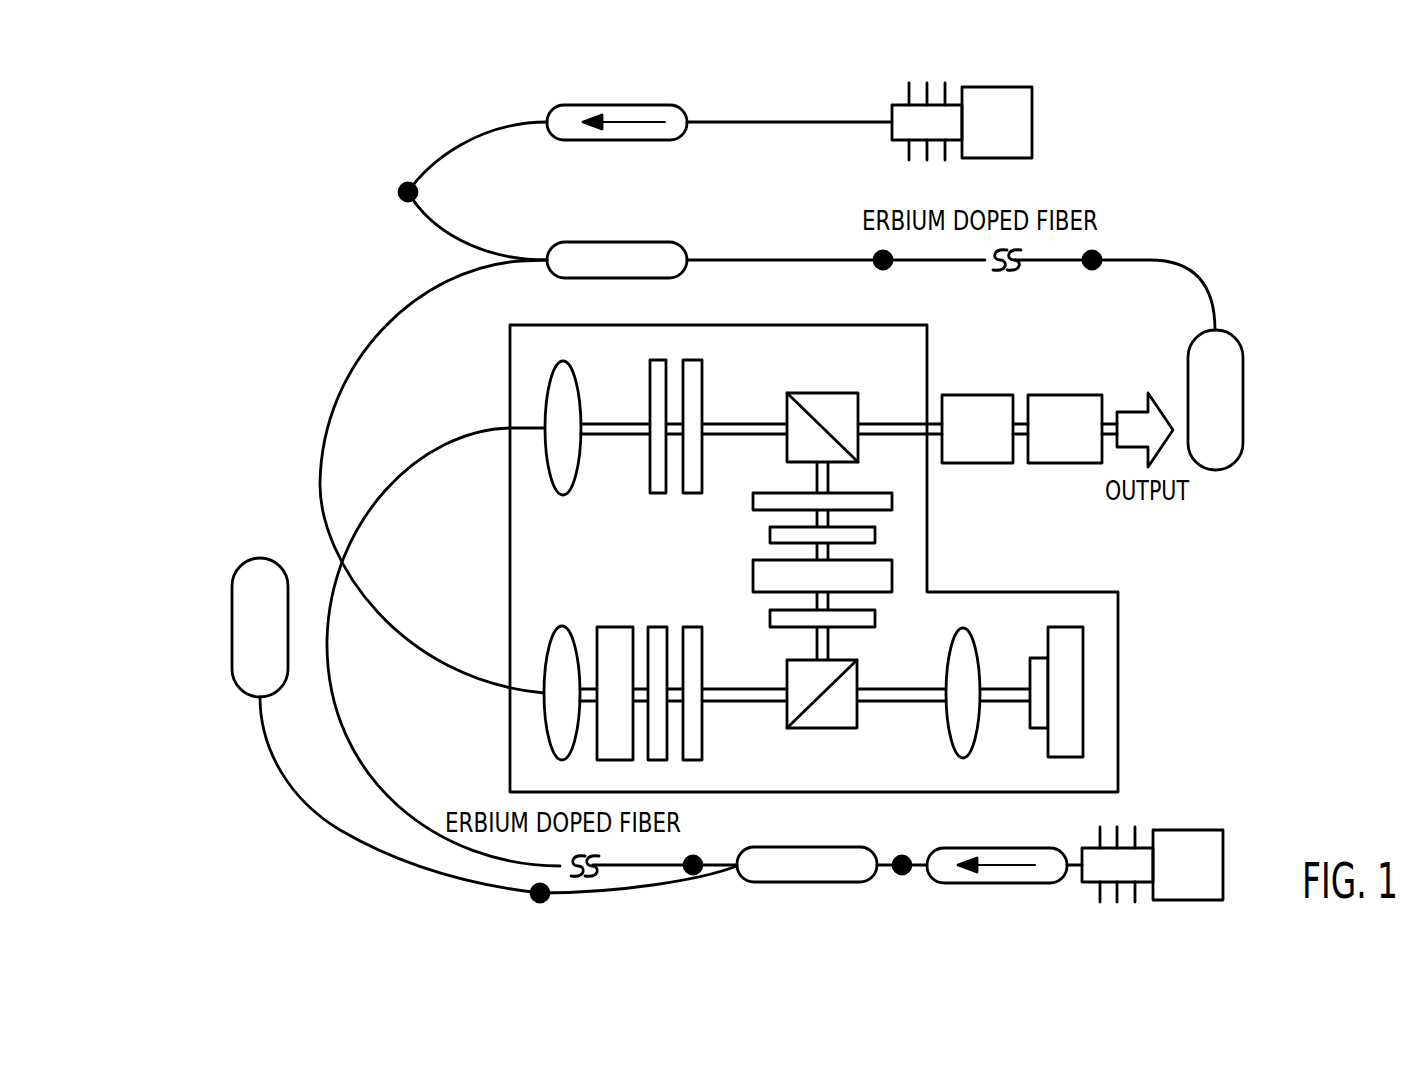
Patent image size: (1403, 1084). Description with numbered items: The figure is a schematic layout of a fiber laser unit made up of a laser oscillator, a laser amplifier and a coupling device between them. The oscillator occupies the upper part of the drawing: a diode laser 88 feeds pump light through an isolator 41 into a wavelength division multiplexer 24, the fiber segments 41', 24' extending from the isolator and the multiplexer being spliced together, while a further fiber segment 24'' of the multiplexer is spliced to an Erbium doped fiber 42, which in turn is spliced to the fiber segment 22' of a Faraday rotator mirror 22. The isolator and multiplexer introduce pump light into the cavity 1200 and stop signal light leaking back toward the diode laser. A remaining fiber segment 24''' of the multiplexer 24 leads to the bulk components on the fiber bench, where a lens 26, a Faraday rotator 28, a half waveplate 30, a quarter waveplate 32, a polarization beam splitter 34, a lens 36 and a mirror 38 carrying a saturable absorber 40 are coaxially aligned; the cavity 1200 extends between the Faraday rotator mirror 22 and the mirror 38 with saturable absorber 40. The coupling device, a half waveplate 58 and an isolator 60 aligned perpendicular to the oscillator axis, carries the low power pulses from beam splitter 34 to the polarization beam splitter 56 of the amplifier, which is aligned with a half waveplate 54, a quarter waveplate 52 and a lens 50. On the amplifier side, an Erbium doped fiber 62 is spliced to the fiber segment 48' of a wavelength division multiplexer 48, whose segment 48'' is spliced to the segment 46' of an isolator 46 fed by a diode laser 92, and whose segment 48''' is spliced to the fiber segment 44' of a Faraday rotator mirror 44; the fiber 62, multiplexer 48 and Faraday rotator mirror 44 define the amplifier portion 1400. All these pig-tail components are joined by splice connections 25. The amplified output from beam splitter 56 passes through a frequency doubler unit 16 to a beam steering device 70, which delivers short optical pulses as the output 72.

The frequency doubler unit 16 is at (975, 395).
The Faraday rotator mirror 22 is at (1257, 400).
The optical fiber segment 22' is at (1198, 295).
The wavelength division multiplexer 24 is at (617, 233).
The optical fiber segment 24' is at (477, 222).
The optical fiber segment 24'' is at (785, 226).
The optical fiber segment 24''' is at (393, 476).
The splice connections 25 is at (399, 192).
The lens 26 is at (558, 645).
The Faraday rotator 28 is at (612, 627).
The half waveplate 30 is at (658, 627).
The quarter waveplate 32 is at (703, 645).
The polarization beam splitter 34 is at (830, 730).
The lens 36 is at (947, 675).
The mirror 38 is at (1068, 627).
The saturable absorber 40 is at (1030, 670).
The isolator 41 is at (617, 100).
The optical fiber segment 41' is at (474, 142).
The doped optical fiber 42 is at (1052, 262).
The Faraday rotator mirror 44 is at (214, 627).
The optical fiber segment 44' is at (358, 795).
The isolator 46 is at (997, 888).
The optical fiber segment 46' is at (931, 895).
The wavelength division multiplexer 48 is at (807, 887).
The optical fiber segment 48' is at (737, 836).
The optical fiber segment 48'' is at (867, 896).
The optical fiber segment 48''' is at (638, 898).
The lens 50 is at (578, 367).
The quarter waveplate 52 is at (650, 470).
The half waveplate 54 is at (690, 493).
The polarization beam splitter 56 is at (815, 393).
The half waveplate 58 is at (892, 498).
The isolator 60 is at (745, 527).
The doped optical fiber 62 is at (407, 810).
The beam steering device 70 is at (1063, 395).
The output 72 is at (1132, 410).
The diode laser 88 is at (1032, 112).
The diode laser 92 is at (1210, 830).
The cavity 1200 is at (1215, 250).
The amplifier portion 1400 is at (366, 880).